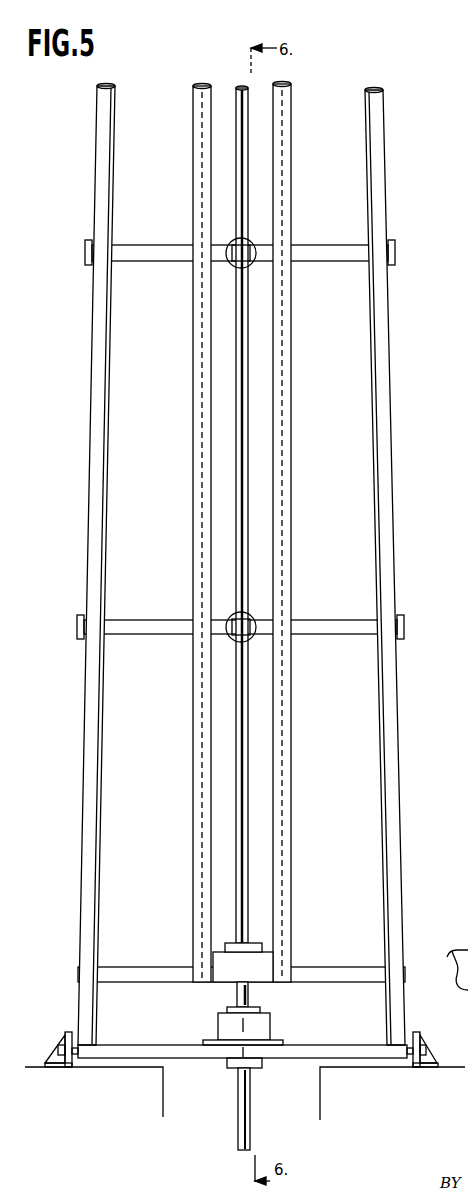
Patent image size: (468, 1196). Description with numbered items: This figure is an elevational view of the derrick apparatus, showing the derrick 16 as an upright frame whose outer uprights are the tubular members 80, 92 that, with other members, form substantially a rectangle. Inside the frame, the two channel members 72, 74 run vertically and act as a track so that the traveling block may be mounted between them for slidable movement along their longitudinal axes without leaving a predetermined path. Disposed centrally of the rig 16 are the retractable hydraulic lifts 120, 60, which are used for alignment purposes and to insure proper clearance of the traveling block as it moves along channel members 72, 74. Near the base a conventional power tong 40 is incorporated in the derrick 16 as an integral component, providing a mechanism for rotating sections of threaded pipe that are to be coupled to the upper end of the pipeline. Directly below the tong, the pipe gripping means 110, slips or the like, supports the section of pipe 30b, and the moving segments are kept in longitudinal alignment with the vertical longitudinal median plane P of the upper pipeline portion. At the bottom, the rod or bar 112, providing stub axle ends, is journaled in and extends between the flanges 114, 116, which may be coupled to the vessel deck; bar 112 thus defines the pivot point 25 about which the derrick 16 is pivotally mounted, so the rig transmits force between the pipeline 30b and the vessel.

The derrick 16 is at (255, 565).
The tubular member 80 is at (105, 572).
The tubular member 92 is at (380, 547).
The channel member 72 is at (193, 501).
The channel member 74 is at (291, 494).
The retractable hydraulic lift 120 is at (255, 245).
The retractable hydraulic lift 60 is at (256, 618).
The power tong 40 is at (243, 965).
The vertical longitudinal median plane P is at (250, 992).
The pipe gripping slip mechanism 110 is at (257, 1028).
The rod or bar 112 is at (172, 1049).
The flange 114 is at (58, 1046).
The flange 116 is at (422, 1038).
The pivot point 25 is at (430, 1057).
The pipeline portion 30b is at (248, 1127).